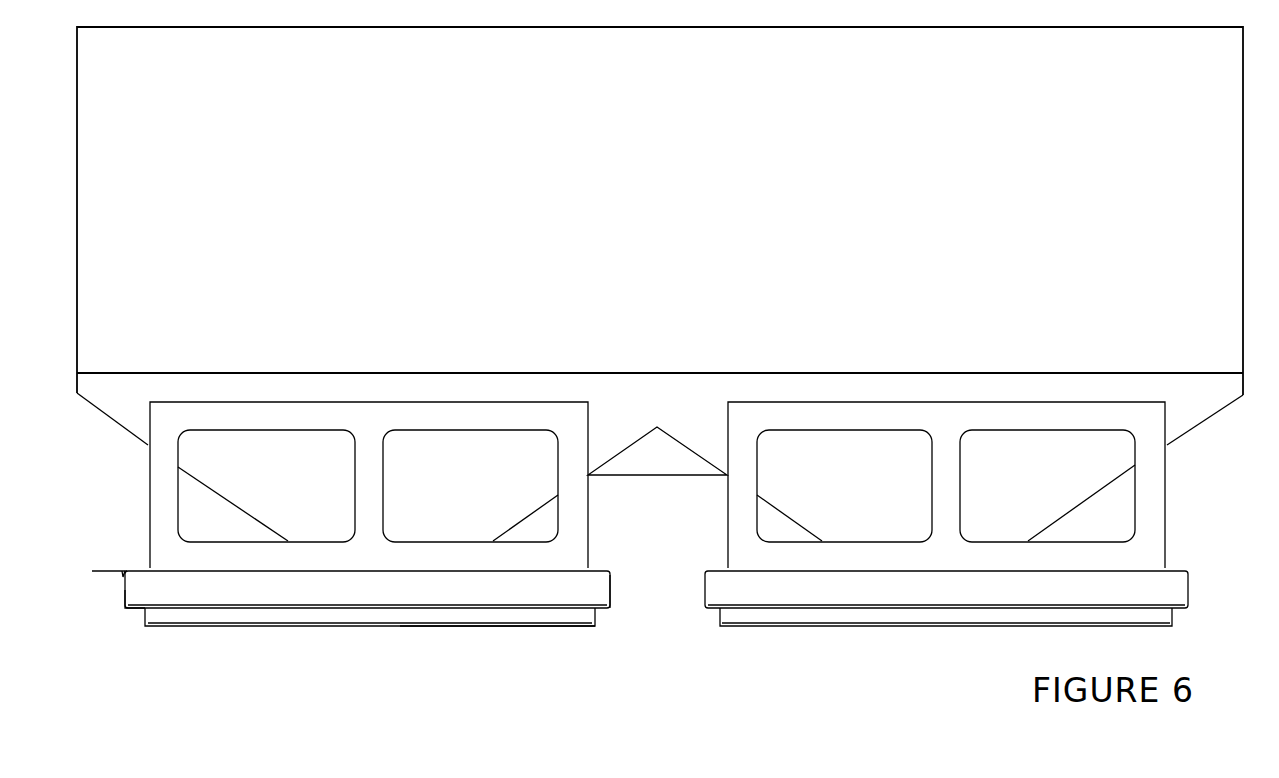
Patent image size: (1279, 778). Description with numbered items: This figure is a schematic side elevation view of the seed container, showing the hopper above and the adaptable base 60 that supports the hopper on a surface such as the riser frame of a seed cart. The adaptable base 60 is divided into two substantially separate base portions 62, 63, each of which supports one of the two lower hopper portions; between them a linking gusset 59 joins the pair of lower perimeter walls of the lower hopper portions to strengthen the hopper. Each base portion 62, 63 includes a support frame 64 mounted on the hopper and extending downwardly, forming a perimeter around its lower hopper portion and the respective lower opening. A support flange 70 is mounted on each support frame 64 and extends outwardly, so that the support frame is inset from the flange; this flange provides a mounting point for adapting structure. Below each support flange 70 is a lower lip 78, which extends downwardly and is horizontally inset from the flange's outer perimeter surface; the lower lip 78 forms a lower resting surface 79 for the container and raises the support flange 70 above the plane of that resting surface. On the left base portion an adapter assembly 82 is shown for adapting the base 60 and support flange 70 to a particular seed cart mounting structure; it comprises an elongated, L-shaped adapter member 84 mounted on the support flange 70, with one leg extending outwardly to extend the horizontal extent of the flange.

The linking gusset 59 is at (662, 460).
The adaptable base 60 is at (345, 628).
The base portion 62 is at (497, 652).
The base portion 63 is at (842, 652).
The support frame 64 is at (126, 475).
The support flange 70 is at (622, 602).
The lower lip 78 is at (255, 618).
The lower resting surface 79 is at (300, 628).
The adapter assembly 82 is at (101, 626).
The adapter member 84 is at (103, 572).